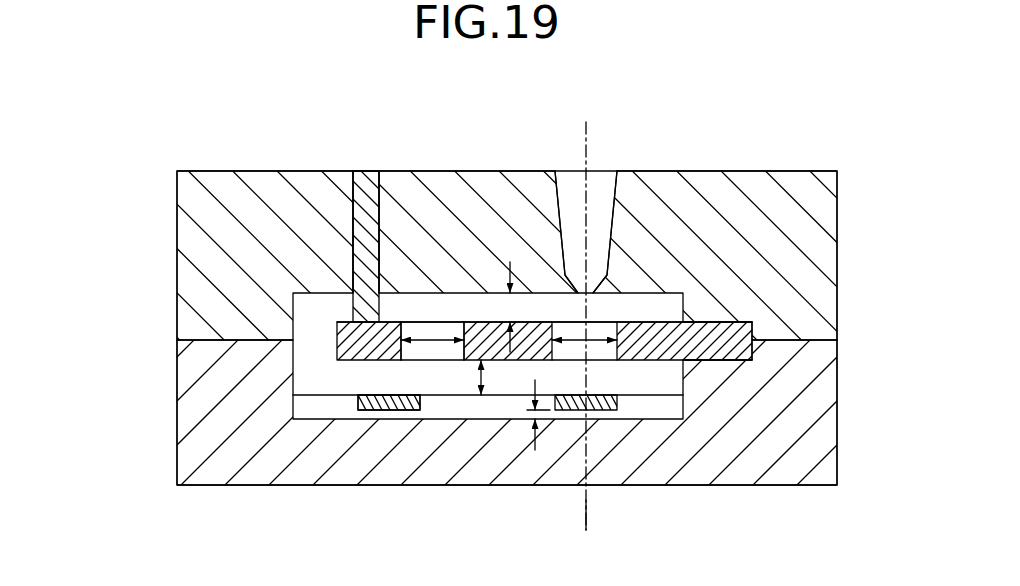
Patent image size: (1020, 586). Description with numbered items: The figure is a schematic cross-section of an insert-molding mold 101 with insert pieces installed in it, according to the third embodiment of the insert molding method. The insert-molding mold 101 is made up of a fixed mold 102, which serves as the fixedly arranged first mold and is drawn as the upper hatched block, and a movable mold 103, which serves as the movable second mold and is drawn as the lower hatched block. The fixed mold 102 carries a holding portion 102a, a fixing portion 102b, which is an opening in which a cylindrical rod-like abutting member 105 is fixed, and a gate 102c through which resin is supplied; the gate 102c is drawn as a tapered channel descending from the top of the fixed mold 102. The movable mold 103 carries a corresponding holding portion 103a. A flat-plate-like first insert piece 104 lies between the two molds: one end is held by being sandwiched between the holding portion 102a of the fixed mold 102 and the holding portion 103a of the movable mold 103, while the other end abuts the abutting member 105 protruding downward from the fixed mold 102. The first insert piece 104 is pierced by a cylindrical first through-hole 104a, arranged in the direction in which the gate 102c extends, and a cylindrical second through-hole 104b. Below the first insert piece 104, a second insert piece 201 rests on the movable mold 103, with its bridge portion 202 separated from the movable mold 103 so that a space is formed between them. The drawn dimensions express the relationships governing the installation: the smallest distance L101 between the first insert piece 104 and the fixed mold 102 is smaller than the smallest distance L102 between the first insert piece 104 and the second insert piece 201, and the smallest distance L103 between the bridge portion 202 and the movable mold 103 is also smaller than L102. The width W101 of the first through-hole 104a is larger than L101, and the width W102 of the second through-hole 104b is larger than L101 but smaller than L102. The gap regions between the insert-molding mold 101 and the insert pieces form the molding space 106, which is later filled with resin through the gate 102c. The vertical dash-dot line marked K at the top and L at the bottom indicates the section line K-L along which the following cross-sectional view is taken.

The insert-molding mold 101 is at (83, 242).
The fixed mold 102 is at (200, 253).
The movable mold 103 is at (200, 413).
The first insert piece 104 is at (337, 350).
The abutting member 105 is at (370, 200).
The molding space 106 is at (683, 388).
The second insert piece 201 is at (373, 410).
The bridge portion 202 is at (364, 484).
The holding portion 102a is at (733, 325).
The fixing portion 102b is at (350, 205).
The gate 102c is at (560, 208).
The holding portion 103a is at (733, 358).
The first through-hole 104a is at (607, 320).
The second through-hole 104b is at (412, 323).
The smallest distance L101 is at (510, 306).
The smallest distance L102 is at (481, 380).
The smallest distance L103 is at (534, 425).
The width W101 is at (603, 326).
The width W102 is at (428, 342).
The line K-L K is at (586, 140).
The line K- L is at (586, 518).